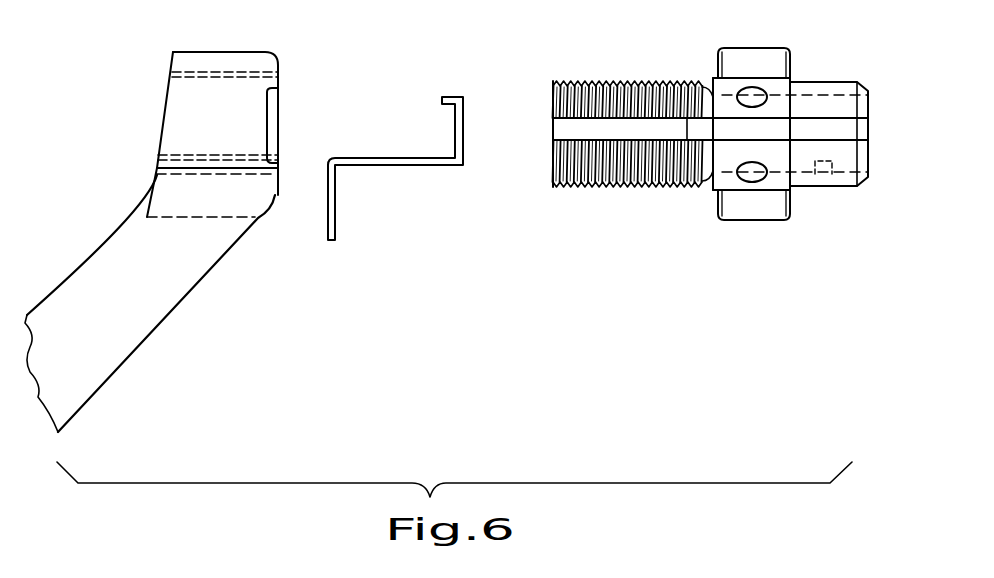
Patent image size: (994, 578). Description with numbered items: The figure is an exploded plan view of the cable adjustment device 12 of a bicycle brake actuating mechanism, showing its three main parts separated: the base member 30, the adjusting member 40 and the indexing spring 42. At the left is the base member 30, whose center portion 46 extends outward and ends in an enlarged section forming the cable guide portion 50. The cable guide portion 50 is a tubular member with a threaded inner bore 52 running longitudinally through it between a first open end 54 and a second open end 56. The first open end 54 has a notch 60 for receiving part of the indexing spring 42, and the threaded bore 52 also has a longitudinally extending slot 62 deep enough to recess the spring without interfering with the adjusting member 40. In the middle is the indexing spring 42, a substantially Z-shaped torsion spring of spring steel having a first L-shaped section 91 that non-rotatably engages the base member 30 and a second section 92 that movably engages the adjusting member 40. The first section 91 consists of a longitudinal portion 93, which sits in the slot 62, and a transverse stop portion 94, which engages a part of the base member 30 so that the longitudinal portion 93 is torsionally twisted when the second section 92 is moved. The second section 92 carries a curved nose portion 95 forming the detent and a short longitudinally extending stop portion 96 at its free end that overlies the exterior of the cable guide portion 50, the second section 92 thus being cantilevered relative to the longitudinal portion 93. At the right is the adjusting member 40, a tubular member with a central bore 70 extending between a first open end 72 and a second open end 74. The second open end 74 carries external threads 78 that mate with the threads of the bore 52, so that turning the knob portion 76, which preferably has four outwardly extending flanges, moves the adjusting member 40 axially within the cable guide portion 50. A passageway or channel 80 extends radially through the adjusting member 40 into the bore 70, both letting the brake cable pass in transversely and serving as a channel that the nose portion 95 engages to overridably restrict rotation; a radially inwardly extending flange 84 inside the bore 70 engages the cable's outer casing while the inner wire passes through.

The cable adjustment device 12 is at (686, 150).
The base member 30 is at (139, 343).
The adjusting member 40 is at (817, 78).
The indexing spring 42 is at (416, 184).
The center portion 46 is at (85, 385).
The cable guide portion 50 is at (235, 52).
The threaded inner bore 52 is at (193, 72).
The first open end 54 is at (279, 80).
The second open end 56 is at (172, 62).
The notch 60 is at (278, 163).
The longitudinally extending slot 62 is at (168, 156).
The central bore 70 is at (832, 178).
The first open end 72 is at (872, 93).
The second open end 74 is at (548, 88).
The knob portion 76 is at (733, 50).
The external threads 78 is at (620, 81).
The passageway or channel 80 is at (590, 138).
The radially inwardly extending flange 84 is at (673, 140).
The first L-shaped section 91 is at (378, 156).
The second section 92 is at (468, 146).
The longitudinal portion 93 is at (389, 165).
The transverse stop portion 94 is at (336, 218).
The curved nose portion 95 is at (455, 131).
The stop portion 96 is at (449, 97).